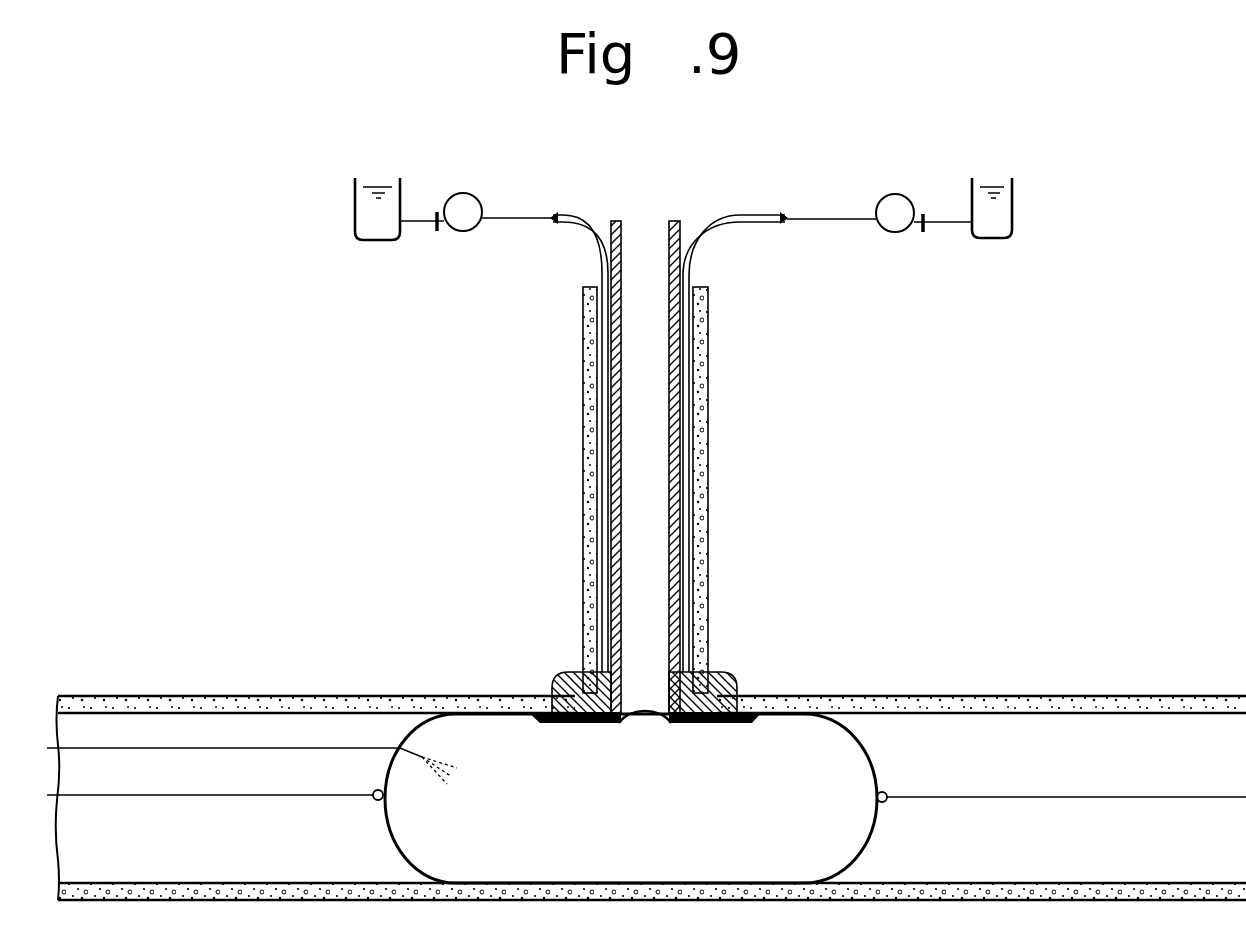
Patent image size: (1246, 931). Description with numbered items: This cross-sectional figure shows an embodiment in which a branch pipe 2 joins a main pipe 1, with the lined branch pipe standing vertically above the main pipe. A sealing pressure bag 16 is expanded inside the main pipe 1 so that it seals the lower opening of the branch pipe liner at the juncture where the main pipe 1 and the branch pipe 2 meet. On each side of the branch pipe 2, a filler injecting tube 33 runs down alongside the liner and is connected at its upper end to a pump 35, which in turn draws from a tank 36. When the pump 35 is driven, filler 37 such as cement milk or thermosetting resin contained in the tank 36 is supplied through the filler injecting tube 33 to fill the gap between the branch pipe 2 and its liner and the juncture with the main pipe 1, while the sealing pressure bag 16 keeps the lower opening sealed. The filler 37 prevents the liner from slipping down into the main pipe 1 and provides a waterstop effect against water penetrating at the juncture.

The main pipe 1 is at (1042, 696).
The branch pipe 2 is at (708, 535).
The sealing pressure bag 16 is at (878, 766).
The filler injecting tube 33 is at (573, 213).
The pump 35 is at (471, 194).
The tank 36 is at (353, 228).
The filler 37 is at (728, 672).